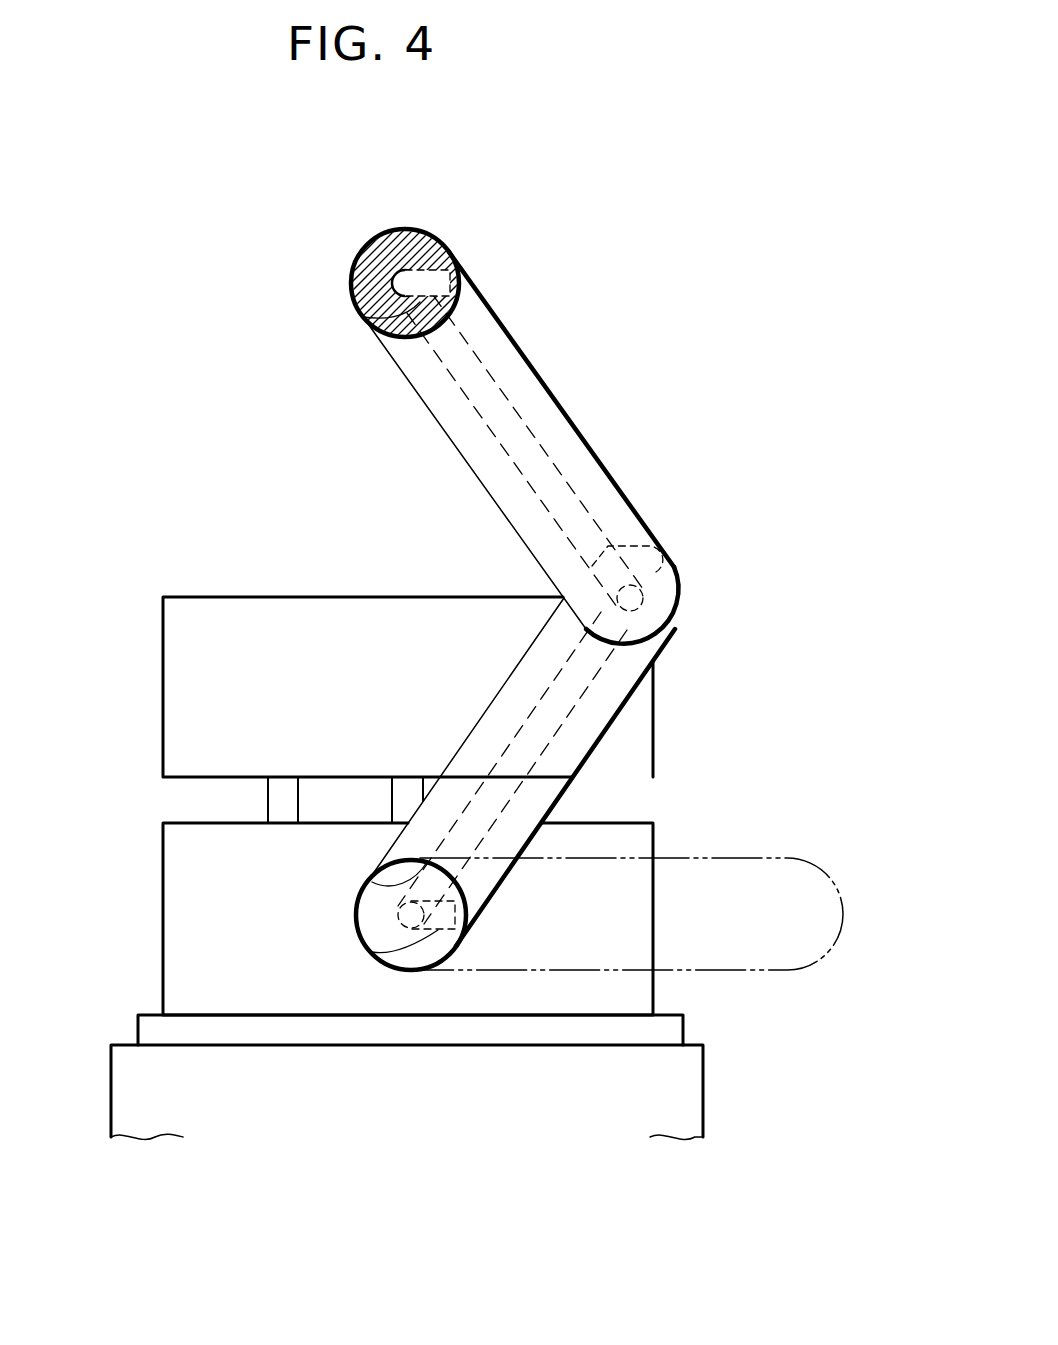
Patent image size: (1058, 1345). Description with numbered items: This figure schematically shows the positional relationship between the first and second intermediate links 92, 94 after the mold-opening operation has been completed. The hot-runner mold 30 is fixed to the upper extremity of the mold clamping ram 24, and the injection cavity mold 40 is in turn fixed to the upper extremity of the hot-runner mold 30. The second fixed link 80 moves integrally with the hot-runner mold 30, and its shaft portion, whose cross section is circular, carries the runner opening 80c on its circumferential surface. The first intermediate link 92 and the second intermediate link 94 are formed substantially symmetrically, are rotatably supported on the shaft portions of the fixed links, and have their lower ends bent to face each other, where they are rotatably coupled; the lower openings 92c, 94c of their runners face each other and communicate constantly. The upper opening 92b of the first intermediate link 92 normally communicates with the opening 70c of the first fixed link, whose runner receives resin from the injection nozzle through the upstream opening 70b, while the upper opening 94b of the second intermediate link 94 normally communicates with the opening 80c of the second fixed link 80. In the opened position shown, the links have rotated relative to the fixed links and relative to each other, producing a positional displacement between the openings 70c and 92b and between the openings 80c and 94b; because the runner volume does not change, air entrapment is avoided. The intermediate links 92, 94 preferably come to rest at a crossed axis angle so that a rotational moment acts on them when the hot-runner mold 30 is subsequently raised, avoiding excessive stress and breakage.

The mold clamping ram 24 is at (678, 1096).
The hot-runner mold 30 is at (628, 990).
The injection cavity mold 40 is at (648, 736).
The opening 70b is at (450, 250).
The opening 70c is at (368, 314).
The second fixed link 80 is at (440, 940).
The opening 80c is at (372, 950).
The first intermediate link 92 is at (573, 426).
The opening 92b is at (458, 279).
The lower opening 92c is at (729, 578).
The second intermediate link 94 is at (547, 791).
The opening 94b is at (365, 882).
The lower opening 94c is at (662, 600).